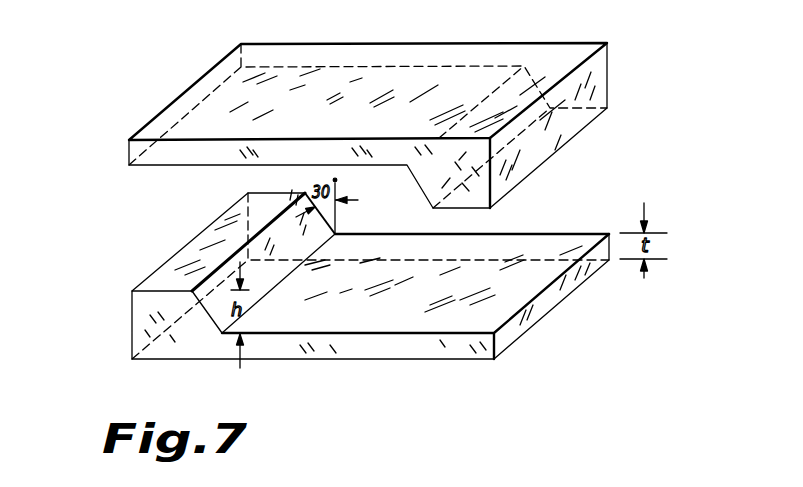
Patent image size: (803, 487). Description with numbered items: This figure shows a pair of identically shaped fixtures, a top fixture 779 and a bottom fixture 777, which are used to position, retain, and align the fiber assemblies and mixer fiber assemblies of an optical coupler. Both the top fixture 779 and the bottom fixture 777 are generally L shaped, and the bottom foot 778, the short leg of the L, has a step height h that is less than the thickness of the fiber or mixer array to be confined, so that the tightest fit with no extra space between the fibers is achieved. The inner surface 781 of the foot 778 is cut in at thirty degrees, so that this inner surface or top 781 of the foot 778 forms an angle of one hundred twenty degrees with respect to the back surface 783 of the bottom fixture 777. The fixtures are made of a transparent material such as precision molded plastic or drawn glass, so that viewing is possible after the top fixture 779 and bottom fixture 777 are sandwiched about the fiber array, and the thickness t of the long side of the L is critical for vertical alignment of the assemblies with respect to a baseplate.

The bottom fixture 777 is at (548, 313).
The bottom foot 778 is at (130, 318).
The top fixture 779 is at (550, 158).
The inner surface 781 is at (272, 252).
The back surface 783 is at (428, 318).